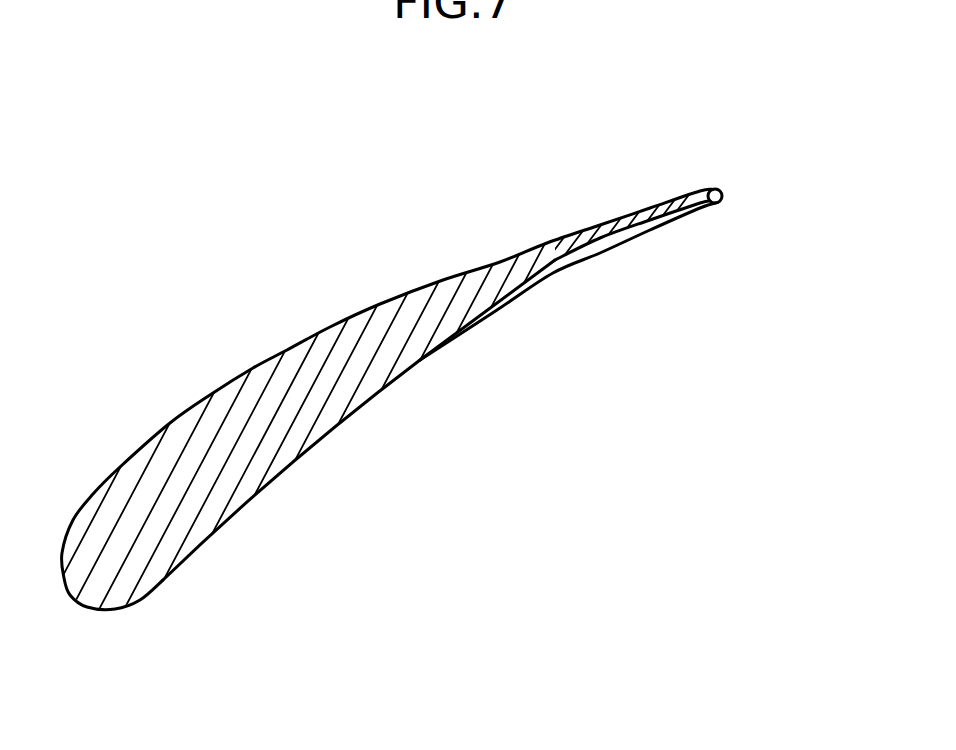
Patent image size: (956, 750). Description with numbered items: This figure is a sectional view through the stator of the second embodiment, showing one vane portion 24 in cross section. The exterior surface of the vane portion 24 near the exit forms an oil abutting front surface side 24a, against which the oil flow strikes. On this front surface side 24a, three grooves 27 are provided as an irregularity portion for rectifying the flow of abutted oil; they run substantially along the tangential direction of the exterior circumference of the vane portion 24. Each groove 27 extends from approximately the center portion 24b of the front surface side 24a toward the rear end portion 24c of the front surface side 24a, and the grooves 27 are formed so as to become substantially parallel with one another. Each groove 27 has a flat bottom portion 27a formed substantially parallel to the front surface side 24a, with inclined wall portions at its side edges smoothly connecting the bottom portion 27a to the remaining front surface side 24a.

The vane portion 24 is at (708, 175).
The front surface side 24a is at (495, 328).
The center portion 24b is at (421, 361).
The rear end portion 24c is at (721, 200).
The groove 27 is at (608, 262).
The flat bottom portion 27a is at (553, 265).